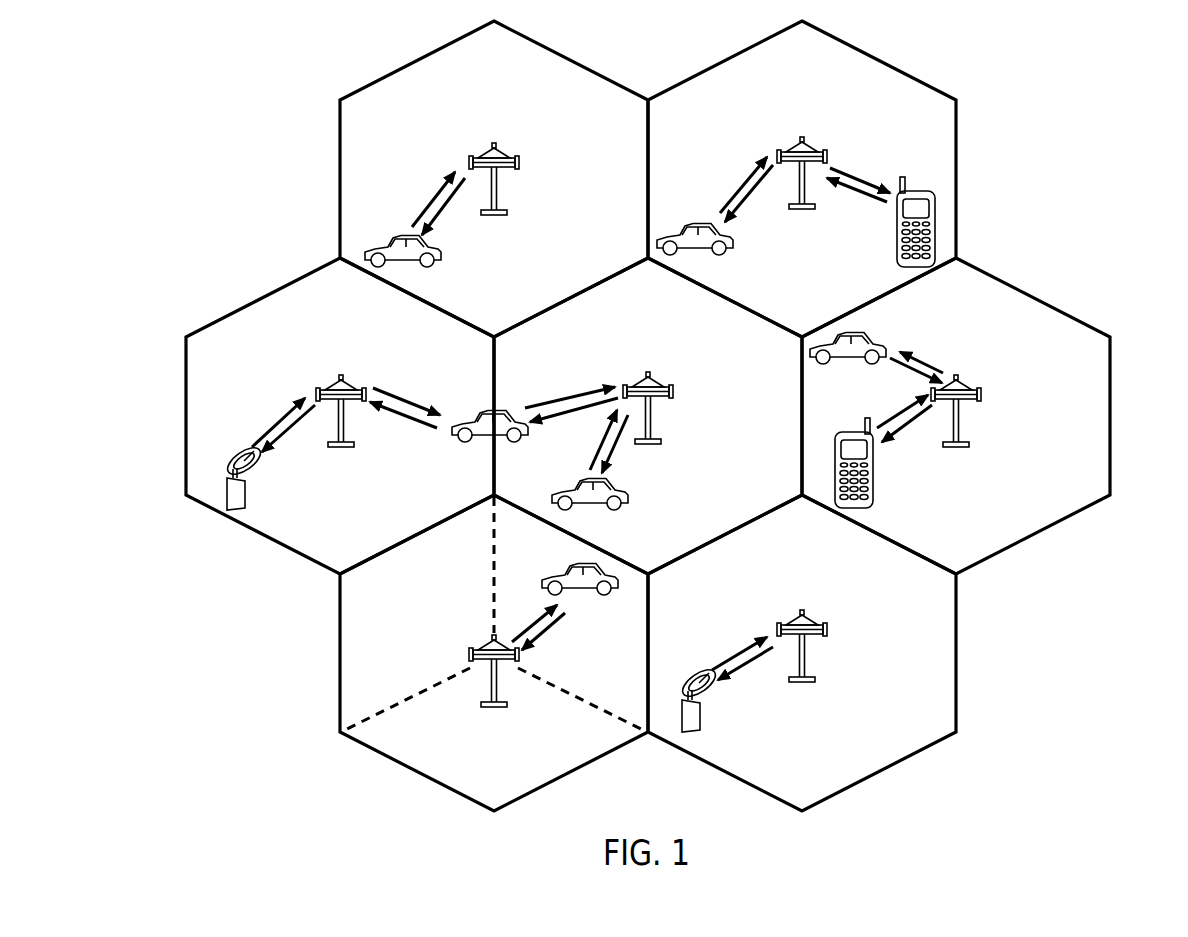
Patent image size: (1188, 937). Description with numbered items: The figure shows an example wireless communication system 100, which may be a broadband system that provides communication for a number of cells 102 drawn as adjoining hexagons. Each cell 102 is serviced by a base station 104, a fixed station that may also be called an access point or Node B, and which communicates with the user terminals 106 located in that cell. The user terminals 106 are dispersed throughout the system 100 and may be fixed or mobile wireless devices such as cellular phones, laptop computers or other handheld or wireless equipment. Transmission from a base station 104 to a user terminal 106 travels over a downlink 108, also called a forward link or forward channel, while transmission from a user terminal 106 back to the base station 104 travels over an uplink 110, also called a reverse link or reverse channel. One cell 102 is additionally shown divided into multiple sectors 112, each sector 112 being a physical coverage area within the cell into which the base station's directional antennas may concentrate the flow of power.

The wireless communication system 100 is at (1093, 106).
The cell 102 is at (425, 57).
The base station 104 is at (494, 142).
The user terminal 106 is at (445, 263).
The downlink 108 is at (438, 212).
The uplink 110 is at (432, 200).
The sector 112 is at (547, 770).